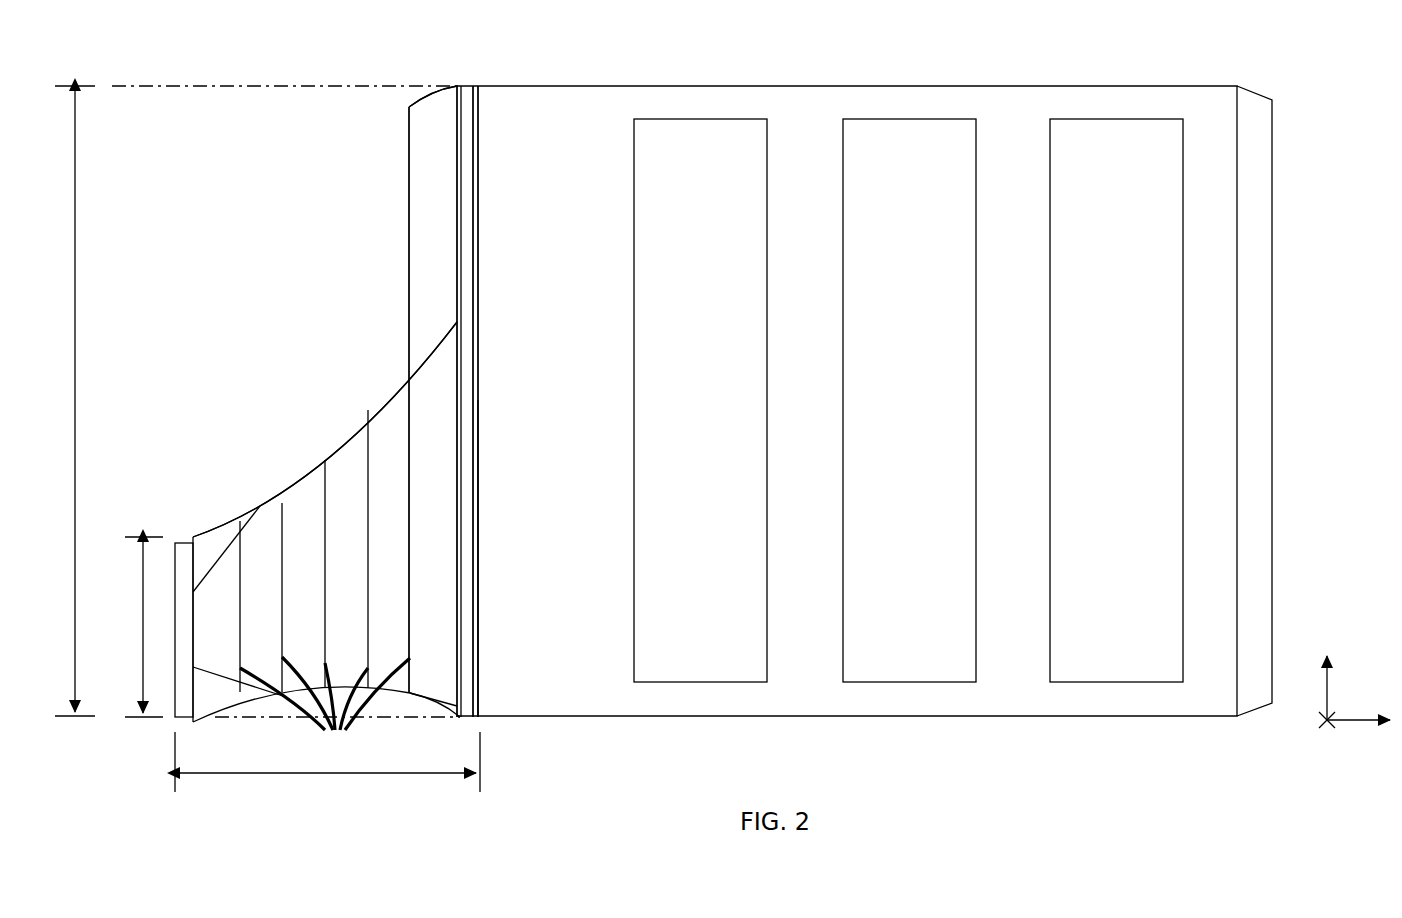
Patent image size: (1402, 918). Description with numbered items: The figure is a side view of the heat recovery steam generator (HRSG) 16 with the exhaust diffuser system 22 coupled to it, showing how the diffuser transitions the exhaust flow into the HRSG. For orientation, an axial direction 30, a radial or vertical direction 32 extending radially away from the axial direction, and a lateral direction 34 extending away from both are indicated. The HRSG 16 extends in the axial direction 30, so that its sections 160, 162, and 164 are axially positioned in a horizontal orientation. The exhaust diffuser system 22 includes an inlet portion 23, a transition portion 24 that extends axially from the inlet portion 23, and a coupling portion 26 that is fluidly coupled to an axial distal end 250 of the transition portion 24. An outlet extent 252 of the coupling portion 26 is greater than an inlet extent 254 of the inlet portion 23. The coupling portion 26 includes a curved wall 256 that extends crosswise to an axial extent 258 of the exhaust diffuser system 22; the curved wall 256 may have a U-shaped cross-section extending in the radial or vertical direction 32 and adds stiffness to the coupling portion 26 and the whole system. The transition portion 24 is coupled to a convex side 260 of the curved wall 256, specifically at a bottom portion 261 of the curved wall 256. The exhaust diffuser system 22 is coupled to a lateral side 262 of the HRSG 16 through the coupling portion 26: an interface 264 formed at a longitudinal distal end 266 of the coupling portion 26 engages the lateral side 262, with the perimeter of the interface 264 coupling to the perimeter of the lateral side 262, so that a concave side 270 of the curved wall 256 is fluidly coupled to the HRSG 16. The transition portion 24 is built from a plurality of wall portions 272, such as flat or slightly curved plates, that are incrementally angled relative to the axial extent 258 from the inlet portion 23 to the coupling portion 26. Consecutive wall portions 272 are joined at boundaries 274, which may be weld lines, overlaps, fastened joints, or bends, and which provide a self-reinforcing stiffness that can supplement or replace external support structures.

The heat recovery steam generator (HRSG) 16 is at (540, 578).
The exhaust diffuser system 22 is at (185, 390).
The inlet portion 23 is at (183, 535).
The transition portion 24 is at (247, 490).
The coupling portion 26 is at (390, 130).
The axial direction 30 is at (1367, 722).
The radial or vertical direction 32 is at (1327, 680).
The lateral direction 34 is at (1328, 727).
The section 160 is at (676, 425).
The section 162 is at (882, 425).
The section 164 is at (1090, 425).
The axial distal end 250 is at (457, 520).
The outlet extent 252 is at (75, 432).
The inlet extent 254 is at (147, 657).
The curved wall 256 is at (433, 123).
The axial extent 258 is at (335, 780).
The convex side 260 is at (430, 325).
The bottom portion 261 is at (488, 607).
The lateral side 262 is at (478, 193).
The interface 264 is at (476, 76).
The longitudinal distal end 266 is at (482, 268).
The concave side 270 is at (487, 290).
The wall portions 272 is at (287, 437).
The boundaries 274 is at (325, 711).